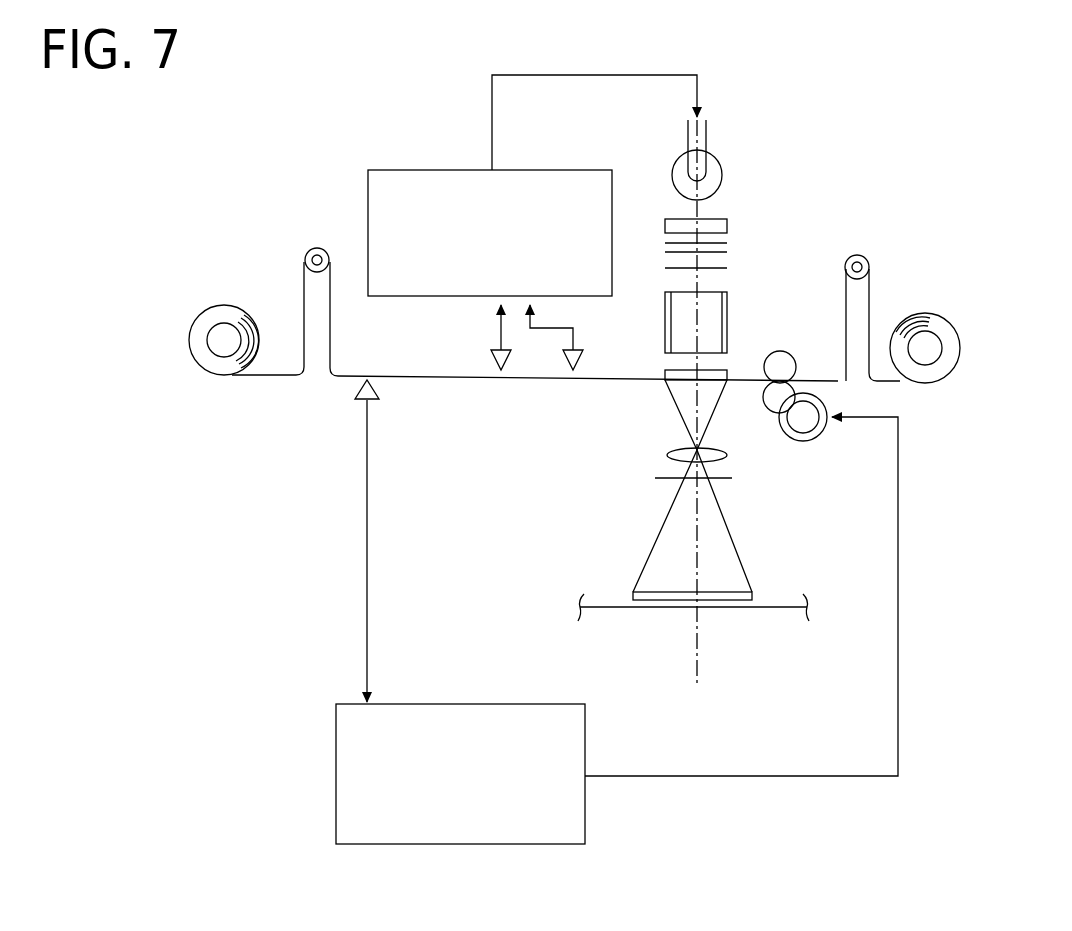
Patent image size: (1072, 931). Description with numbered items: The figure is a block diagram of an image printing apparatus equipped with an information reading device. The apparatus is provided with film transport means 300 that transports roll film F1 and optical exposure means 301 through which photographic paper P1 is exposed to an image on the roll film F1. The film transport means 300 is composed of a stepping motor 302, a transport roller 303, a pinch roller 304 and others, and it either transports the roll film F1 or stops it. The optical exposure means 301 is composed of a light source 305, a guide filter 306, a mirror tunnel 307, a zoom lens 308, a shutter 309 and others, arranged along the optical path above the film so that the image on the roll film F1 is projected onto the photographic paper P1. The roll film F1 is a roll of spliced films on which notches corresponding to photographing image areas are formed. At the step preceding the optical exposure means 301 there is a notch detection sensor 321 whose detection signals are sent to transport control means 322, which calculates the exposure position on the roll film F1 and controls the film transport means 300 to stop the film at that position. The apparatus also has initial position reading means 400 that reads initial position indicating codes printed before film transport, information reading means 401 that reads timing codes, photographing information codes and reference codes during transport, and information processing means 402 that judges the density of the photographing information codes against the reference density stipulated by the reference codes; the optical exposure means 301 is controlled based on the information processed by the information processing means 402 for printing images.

The film transport means 300 is at (913, 434).
The optical exposure means 301 is at (652, 193).
The stepping motor 302 is at (827, 398).
The transport roller 303 is at (778, 350).
The pinch roller 304 is at (317, 248).
The light source 305 is at (706, 135).
The guide filter 306 is at (735, 250).
The mirror tunnel 307 is at (665, 320).
The zoom lens 308 is at (720, 445).
The shutter 309 is at (720, 482).
The photographic paper P1 is at (777, 607).
The roll film F1 is at (872, 292).
The notch detection sensor 321 is at (350, 393).
The transport control means 322 is at (504, 704).
The initial position reading means 400 is at (495, 352).
The information reading means 401 is at (564, 374).
The information processing means 402 is at (418, 170).